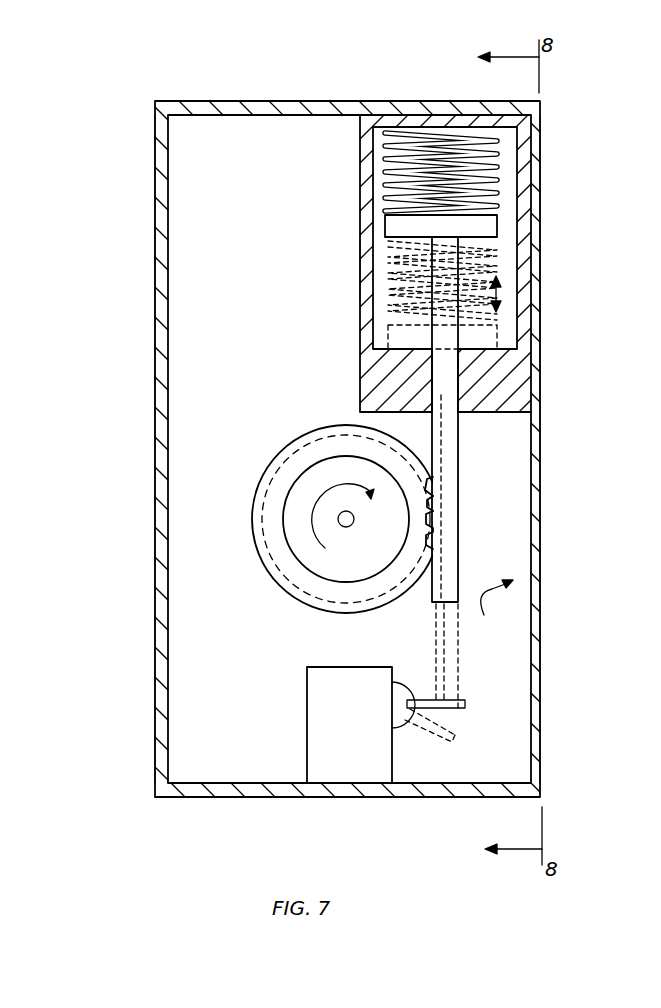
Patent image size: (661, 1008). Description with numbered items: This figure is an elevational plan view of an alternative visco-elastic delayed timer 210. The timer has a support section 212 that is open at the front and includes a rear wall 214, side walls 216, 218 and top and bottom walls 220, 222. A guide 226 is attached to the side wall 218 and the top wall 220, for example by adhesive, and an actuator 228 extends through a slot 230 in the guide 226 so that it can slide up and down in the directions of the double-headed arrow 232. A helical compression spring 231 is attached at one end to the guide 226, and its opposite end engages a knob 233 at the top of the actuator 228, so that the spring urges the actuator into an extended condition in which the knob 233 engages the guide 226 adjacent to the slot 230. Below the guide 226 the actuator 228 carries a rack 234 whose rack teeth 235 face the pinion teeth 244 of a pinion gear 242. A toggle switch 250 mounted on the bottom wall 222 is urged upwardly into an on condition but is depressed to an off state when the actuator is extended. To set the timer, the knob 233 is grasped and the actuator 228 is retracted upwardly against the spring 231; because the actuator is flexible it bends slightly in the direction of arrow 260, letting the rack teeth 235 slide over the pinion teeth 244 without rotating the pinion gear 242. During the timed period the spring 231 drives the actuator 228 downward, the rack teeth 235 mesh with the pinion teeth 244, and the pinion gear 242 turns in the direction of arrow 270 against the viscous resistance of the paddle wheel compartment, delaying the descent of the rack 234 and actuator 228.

The timer 210 is at (137, 116).
The support section 212 is at (152, 195).
The rear wall 214 is at (240, 147).
The side wall 216 is at (155, 291).
The side wall 218 is at (541, 341).
The top wall 220 is at (325, 116).
The bottom wall 222 is at (262, 790).
The guide 226 is at (360, 262).
The actuator 228 is at (432, 268).
The slot 230 is at (460, 410).
The helical compression spring 231 is at (497, 185).
The double-headed arrow 232 is at (500, 295).
The knob 233 is at (385, 225).
The rack 234 is at (447, 497).
The rack teeth 235 is at (440, 536).
The pinion gear 242 is at (248, 505).
The pinion teeth 244 is at (438, 497).
The toggle switch 250 is at (402, 730).
The arrow 260 is at (506, 603).
The arrow 270 is at (293, 531).